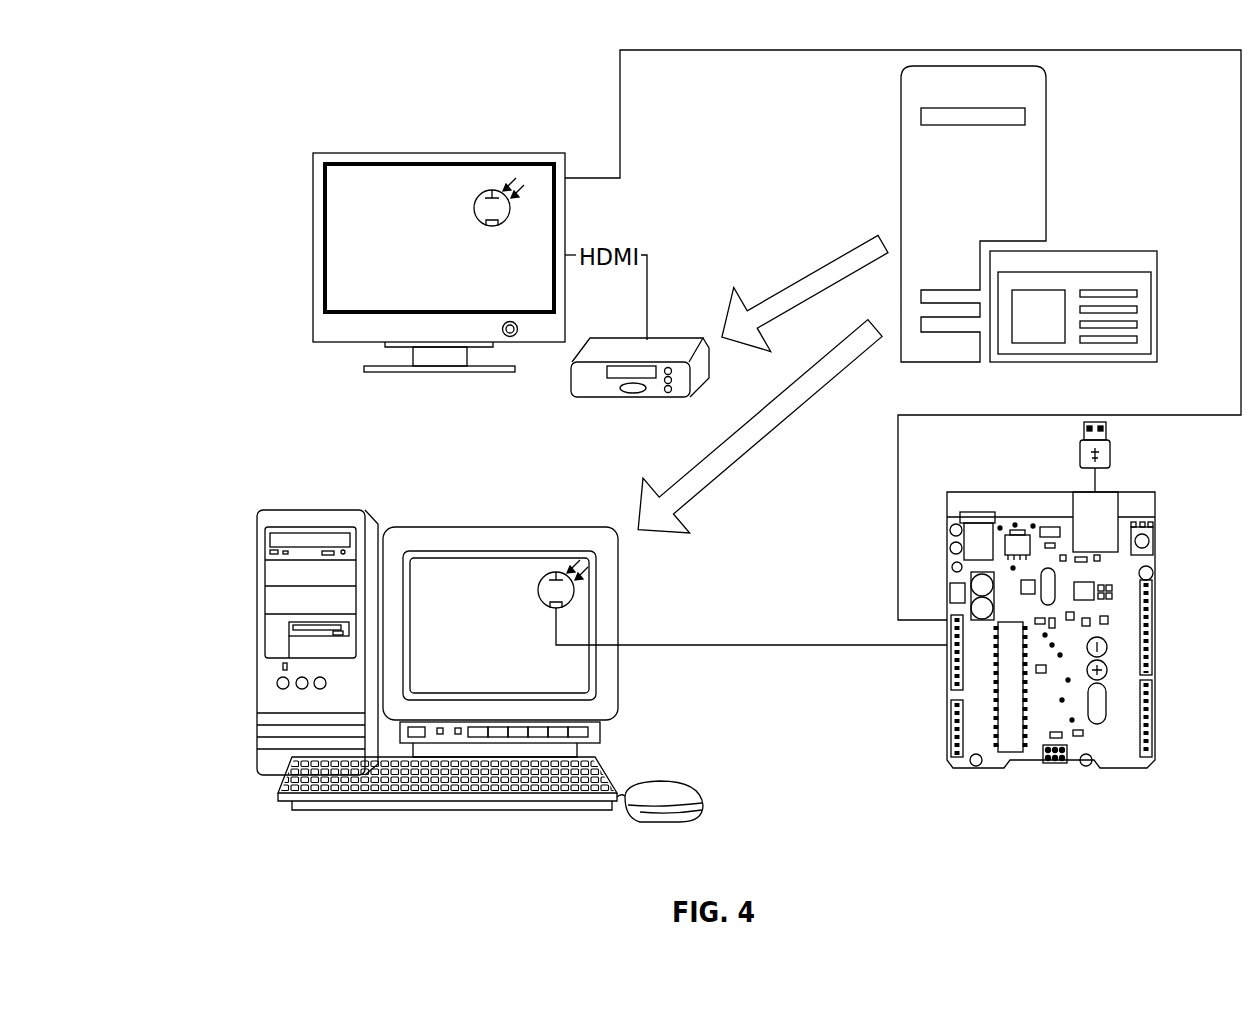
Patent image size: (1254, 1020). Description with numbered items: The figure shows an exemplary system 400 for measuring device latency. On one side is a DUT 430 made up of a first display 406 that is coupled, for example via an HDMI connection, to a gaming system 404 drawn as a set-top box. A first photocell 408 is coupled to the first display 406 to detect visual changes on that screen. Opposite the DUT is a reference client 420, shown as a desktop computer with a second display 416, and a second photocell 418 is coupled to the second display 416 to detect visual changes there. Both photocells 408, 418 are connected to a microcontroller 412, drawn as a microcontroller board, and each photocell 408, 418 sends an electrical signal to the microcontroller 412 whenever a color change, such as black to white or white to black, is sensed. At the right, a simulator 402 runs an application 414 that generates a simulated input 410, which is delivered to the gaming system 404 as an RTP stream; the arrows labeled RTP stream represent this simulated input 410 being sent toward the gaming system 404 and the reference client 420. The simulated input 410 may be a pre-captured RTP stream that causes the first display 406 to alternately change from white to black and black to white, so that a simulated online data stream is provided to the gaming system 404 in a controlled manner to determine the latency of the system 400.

The system 400 is at (1068, 32).
The simulator 402 is at (1002, 216).
The gaming system 404 is at (668, 339).
The first display 406 is at (388, 181).
The first photocell 408 is at (480, 190).
The simulated input 410 is at (850, 252).
The microcontroller 412 is at (1043, 745).
The application 414 is at (1074, 298).
The second display 416 is at (448, 570).
The second photocell 418 is at (545, 575).
The reference client 420 is at (280, 598).
The DUT 430 is at (300, 217).